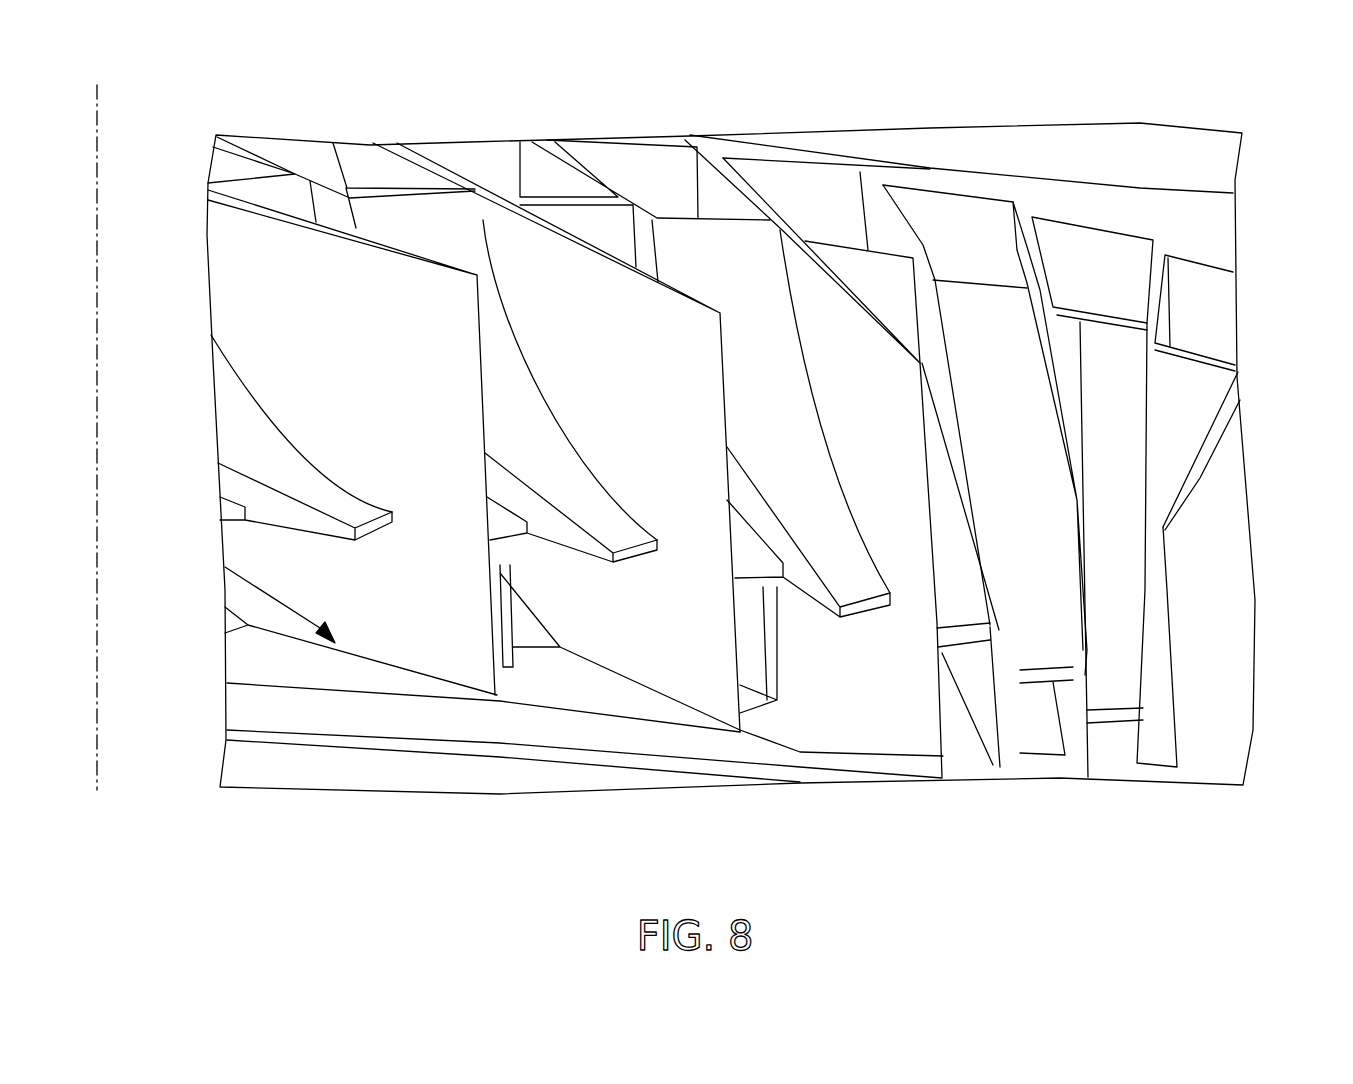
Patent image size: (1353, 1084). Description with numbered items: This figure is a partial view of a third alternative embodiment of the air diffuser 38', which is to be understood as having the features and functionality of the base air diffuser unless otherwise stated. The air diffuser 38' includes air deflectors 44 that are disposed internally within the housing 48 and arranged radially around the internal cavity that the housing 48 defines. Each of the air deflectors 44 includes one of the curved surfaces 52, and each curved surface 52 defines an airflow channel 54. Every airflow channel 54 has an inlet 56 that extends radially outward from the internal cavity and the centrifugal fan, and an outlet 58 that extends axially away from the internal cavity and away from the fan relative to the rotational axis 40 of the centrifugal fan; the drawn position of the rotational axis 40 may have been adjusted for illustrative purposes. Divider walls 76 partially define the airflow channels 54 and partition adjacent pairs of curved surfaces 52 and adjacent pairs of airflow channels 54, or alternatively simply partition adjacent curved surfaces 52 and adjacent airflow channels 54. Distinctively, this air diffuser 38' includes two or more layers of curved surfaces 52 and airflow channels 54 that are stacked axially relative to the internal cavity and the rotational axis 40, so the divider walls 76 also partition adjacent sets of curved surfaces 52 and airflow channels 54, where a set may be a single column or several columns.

The air diffuser 38' is at (779, 421).
The rotational axis 40 is at (97, 87).
The air deflectors 44 is at (301, 135).
The housing 48 is at (1218, 182).
The curved surfaces 52 is at (250, 452).
The airflow channel 54 is at (1013, 203).
The inlet 56 is at (1040, 603).
The outlet 58 is at (427, 208).
The divider walls 76 is at (225, 268).